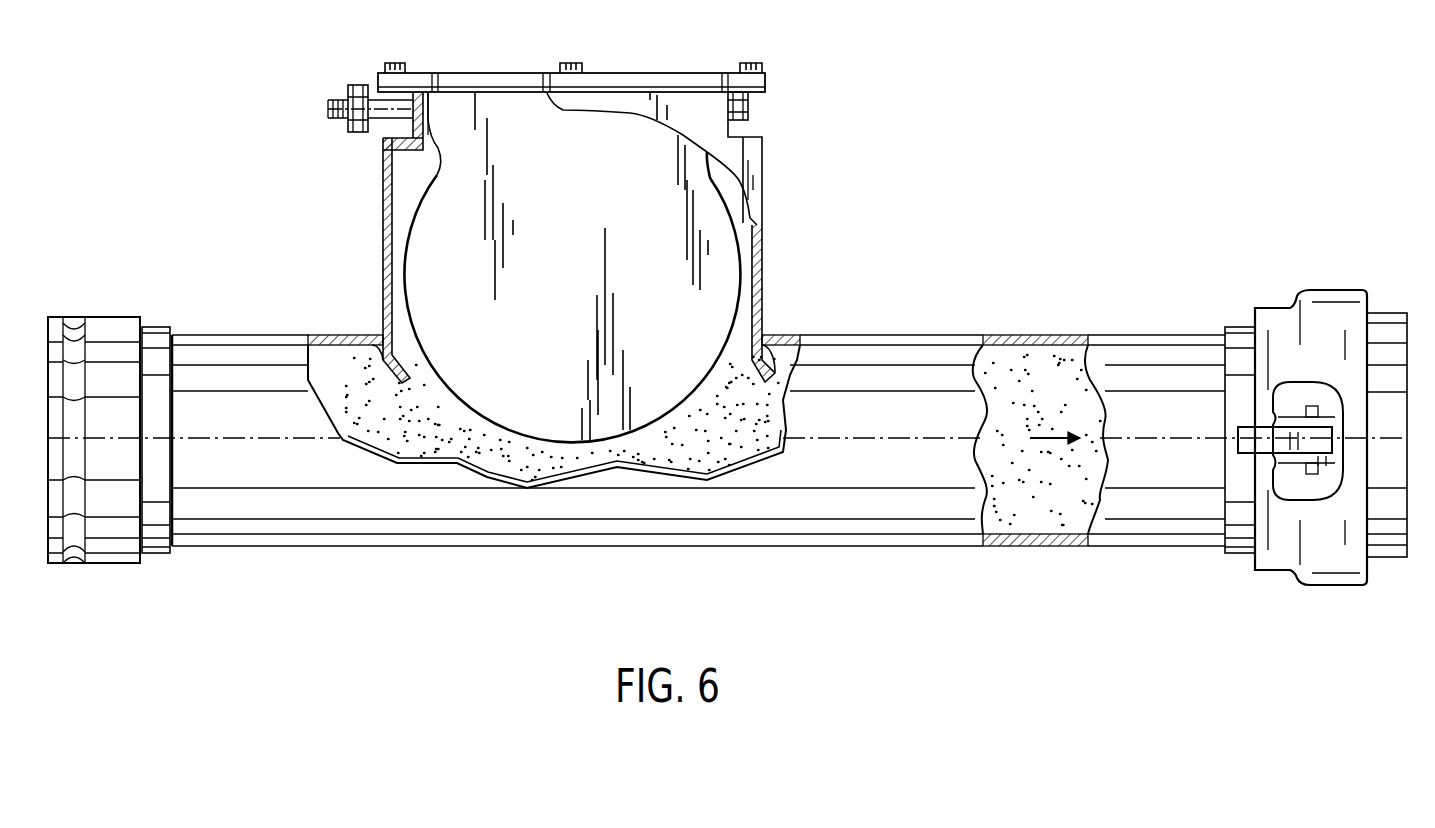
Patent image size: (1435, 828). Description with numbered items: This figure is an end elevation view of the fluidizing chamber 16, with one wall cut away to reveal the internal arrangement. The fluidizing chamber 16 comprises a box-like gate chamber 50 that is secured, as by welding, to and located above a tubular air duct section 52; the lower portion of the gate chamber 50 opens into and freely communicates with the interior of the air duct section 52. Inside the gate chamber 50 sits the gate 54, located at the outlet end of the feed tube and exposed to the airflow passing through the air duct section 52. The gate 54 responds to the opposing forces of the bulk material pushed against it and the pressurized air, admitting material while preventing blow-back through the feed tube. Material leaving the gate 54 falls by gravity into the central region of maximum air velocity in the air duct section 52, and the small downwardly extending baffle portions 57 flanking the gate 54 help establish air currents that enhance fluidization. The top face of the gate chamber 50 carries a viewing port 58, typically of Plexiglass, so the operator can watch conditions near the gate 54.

The fluidizing chamber 16 is at (790, 158).
The gate chamber 50 is at (763, 262).
The air duct section 52 is at (918, 335).
The gate 54 is at (442, 218).
The baffle portions 57 is at (370, 337).
The viewing port 58 is at (530, 72).